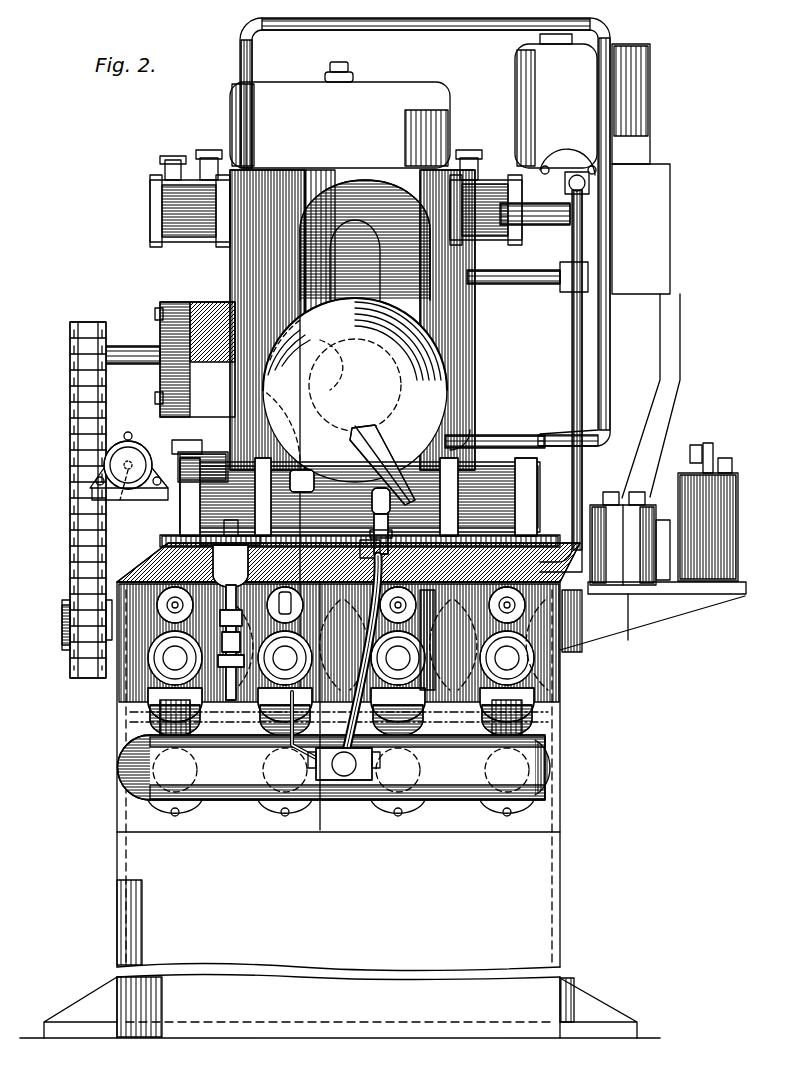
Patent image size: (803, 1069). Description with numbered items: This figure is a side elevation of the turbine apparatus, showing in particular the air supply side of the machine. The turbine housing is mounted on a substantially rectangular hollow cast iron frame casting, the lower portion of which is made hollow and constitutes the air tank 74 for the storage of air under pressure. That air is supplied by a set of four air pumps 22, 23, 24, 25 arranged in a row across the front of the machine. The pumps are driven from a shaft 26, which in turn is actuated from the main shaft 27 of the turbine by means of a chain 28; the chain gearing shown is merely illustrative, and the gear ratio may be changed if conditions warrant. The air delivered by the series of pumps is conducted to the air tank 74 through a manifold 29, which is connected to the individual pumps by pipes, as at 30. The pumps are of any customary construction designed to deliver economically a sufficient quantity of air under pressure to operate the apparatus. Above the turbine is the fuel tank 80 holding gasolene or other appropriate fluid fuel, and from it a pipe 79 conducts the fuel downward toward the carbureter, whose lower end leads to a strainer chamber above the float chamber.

The tank 80 is at (410, 97).
The main shaft 27 is at (120, 348).
The pipe 79 is at (212, 454).
The chain 28 is at (80, 462).
The shaft 26 is at (68, 620).
The air pump 22 is at (145, 645).
The air pump 23 is at (254, 696).
The pipe 30 is at (282, 724).
The air pump 24 is at (362, 660).
The air pump 25 is at (473, 658).
The manifold 29 is at (512, 758).
The air tank 74 is at (540, 906).